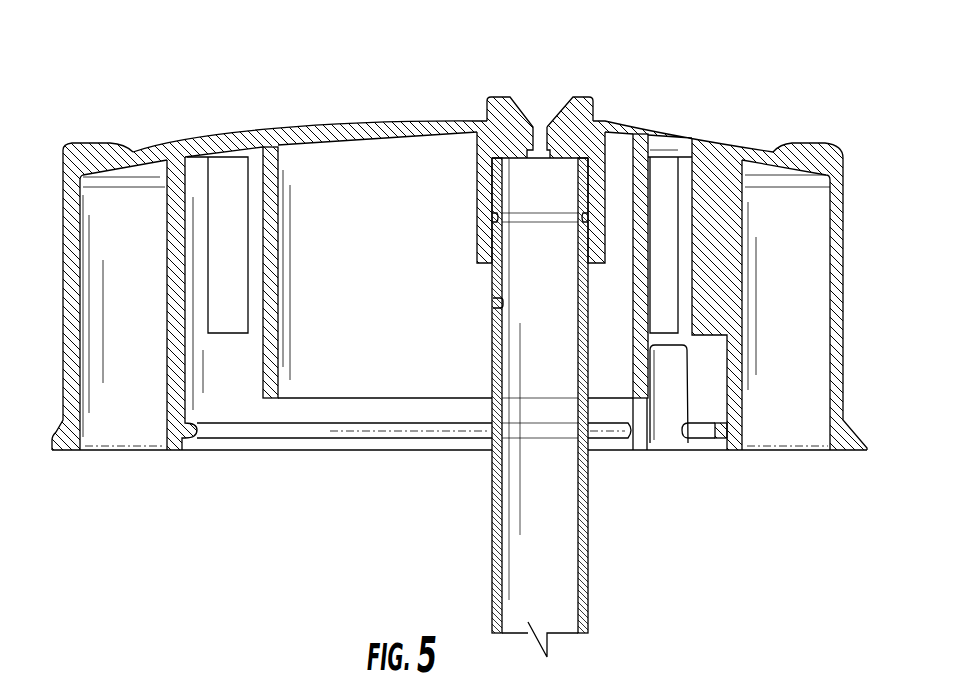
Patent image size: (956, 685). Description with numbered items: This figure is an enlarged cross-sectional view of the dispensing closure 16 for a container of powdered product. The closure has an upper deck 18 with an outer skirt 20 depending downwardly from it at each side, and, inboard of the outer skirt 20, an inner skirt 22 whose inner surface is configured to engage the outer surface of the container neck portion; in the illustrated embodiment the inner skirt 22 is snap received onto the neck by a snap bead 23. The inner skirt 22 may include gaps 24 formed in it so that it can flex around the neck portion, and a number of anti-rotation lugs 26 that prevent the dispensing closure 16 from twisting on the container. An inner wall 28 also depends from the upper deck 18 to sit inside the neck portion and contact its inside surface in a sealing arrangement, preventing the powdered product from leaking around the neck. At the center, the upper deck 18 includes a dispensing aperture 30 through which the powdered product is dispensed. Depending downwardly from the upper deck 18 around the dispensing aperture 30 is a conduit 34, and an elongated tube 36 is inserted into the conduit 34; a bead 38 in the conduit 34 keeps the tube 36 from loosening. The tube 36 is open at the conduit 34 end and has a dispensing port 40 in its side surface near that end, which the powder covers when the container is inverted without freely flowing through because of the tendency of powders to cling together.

The dispensing closure 16 is at (294, 70).
The upper deck 18 is at (415, 117).
The outer skirt 20 is at (65, 187).
The inner skirt 22 is at (167, 393).
The snap bead 23 is at (223, 432).
The gap 24 is at (666, 440).
The anti-rotation lug 26 is at (237, 170).
The inner wall 28 is at (315, 380).
The dispensing aperture 30 is at (532, 100).
The conduit 34 is at (477, 197).
The elongated tube 36 is at (495, 473).
The bead 38 is at (493, 218).
The dispensing port 40 is at (495, 303).